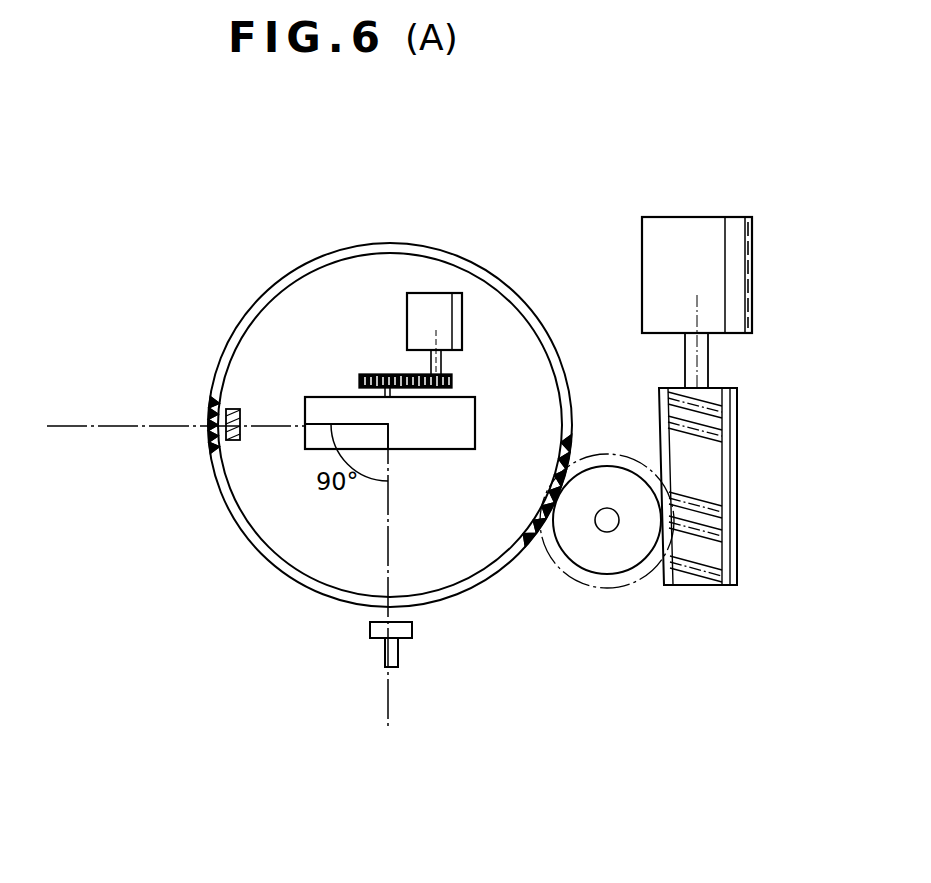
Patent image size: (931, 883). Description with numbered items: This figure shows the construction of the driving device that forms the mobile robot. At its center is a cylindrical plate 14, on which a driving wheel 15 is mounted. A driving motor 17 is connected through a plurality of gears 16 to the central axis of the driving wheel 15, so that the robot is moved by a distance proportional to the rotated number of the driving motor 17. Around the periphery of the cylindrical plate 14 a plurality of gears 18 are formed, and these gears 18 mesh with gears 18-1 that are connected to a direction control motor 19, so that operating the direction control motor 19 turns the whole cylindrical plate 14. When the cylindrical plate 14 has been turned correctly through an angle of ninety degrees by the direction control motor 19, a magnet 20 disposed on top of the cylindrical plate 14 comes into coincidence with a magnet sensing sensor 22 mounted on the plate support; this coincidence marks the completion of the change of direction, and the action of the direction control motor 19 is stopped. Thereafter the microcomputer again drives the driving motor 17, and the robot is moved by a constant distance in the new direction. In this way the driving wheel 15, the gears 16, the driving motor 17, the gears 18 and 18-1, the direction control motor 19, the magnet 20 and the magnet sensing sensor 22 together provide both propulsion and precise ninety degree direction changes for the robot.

The cylindrical plate 14 is at (305, 331).
The driving wheel 15 is at (467, 393).
The gears 16 is at (395, 374).
The driving motor 17 is at (442, 305).
The gears 18 is at (533, 537).
The gears 18-1 is at (633, 557).
The direction control motor 19 is at (740, 272).
The magnet 20 is at (207, 415).
The magnet sensing sensor 22 is at (378, 628).